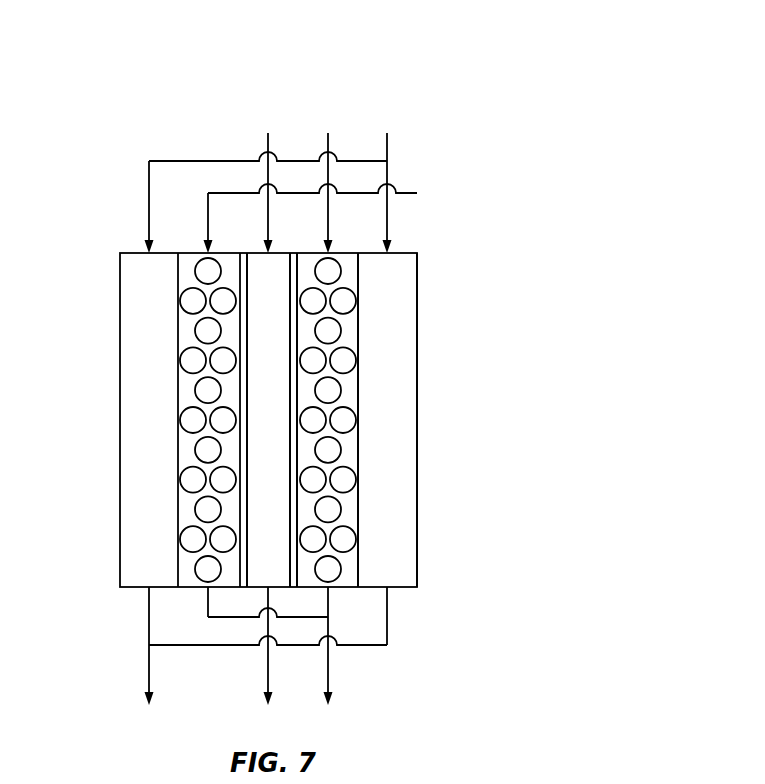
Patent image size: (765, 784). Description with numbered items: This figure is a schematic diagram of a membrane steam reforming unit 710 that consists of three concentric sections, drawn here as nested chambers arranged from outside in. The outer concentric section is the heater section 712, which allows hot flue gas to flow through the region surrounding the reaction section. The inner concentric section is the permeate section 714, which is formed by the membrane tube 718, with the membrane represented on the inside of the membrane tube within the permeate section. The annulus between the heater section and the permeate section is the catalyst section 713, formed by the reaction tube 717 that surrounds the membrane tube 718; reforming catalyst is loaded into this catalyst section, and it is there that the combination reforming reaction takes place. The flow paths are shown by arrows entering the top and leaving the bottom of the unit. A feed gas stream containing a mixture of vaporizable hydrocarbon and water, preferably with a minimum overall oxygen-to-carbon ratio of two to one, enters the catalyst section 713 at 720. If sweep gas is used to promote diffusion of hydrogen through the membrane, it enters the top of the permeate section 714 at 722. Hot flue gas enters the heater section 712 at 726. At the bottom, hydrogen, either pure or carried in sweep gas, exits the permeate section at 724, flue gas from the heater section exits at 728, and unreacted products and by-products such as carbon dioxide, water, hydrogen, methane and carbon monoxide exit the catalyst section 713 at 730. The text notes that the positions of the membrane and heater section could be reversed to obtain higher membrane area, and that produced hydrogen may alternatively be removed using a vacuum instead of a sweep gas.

The membrane steam reforming unit 710 is at (466, 47).
The heater section 712 is at (135, 420).
The catalyst section 713 is at (343, 320).
The permeate section 714 is at (275, 468).
The reaction tube 717 is at (358, 555).
The membrane tube 718 is at (287, 548).
The feed gas inlet 720 is at (328, 139).
The sweep gas inlet 722 is at (268, 139).
The hydrogen outlet 724 is at (266, 666).
The flue gas inlet 726 is at (387, 139).
The flue gas outlet 728 is at (148, 666).
The product outlet 730 is at (330, 664).